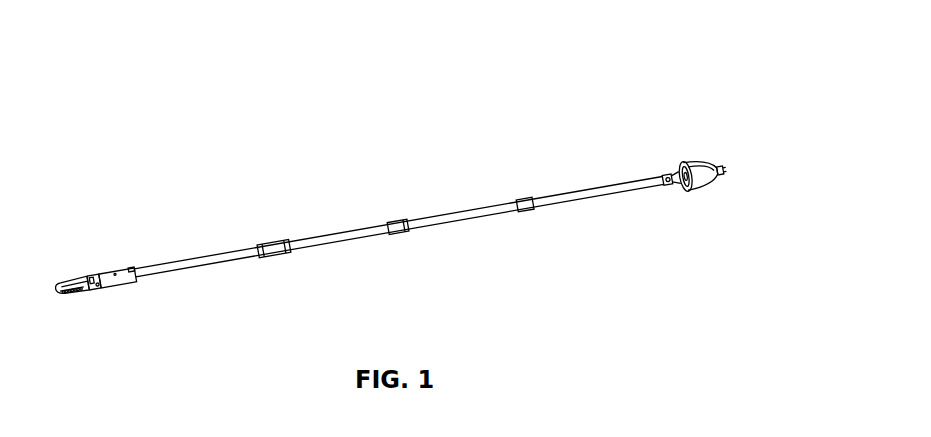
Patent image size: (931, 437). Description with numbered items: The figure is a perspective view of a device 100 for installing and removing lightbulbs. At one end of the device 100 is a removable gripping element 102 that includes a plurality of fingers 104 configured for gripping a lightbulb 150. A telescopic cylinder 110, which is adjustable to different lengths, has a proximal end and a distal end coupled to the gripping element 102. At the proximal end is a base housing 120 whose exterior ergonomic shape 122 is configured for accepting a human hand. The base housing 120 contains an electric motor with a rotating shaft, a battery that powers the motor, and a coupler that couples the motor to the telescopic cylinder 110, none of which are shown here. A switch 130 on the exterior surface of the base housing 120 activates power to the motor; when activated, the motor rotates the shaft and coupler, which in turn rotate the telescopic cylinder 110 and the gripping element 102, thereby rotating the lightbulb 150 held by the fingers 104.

The device 100 is at (410, 229).
The telescopic cylinder 110 is at (357, 228).
The base housing 120 is at (122, 201).
The exterior ergonomic shape 122 is at (106, 347).
The switch 130 is at (62, 204).
The removable gripping element 102 is at (673, 167).
The fingers 104 is at (690, 162).
The lightbulb 150 is at (734, 216).